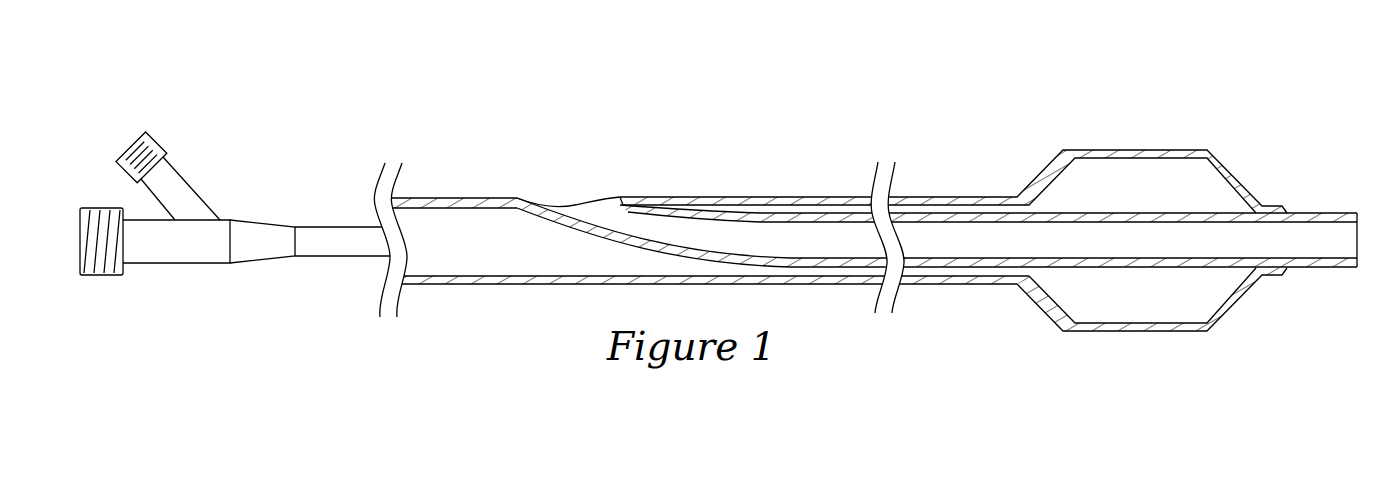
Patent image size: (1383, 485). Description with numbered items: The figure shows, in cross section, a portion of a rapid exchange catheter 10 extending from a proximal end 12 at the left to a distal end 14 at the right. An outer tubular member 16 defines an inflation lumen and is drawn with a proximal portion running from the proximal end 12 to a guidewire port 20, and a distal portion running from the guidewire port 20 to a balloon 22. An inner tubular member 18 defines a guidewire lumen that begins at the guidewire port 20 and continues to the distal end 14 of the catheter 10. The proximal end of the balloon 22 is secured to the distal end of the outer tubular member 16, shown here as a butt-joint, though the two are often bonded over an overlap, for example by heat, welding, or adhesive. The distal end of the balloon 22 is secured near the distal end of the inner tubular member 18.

The rapid exchange catheter 10 is at (718, 232).
The proximal end 12 is at (175, 263).
The distal end 14 is at (1030, 138).
The outer tubular member 16 is at (490, 287).
The inner tubular member 18 is at (818, 215).
The guidewire port 20 is at (568, 193).
The balloon 22 is at (1100, 333).